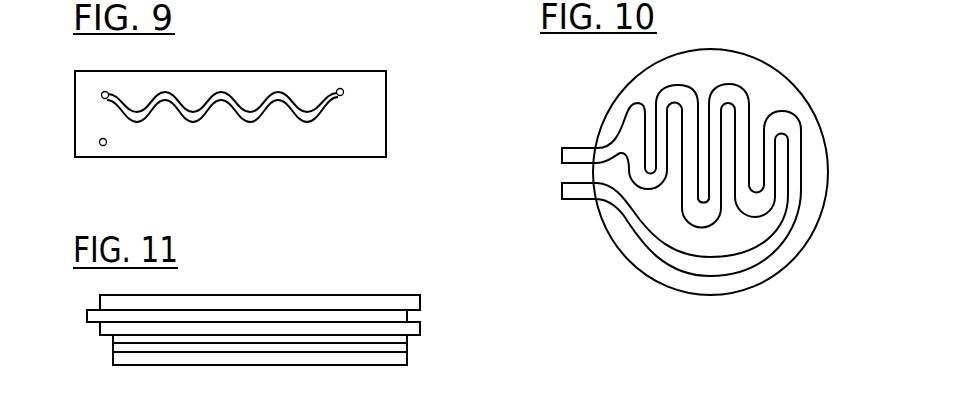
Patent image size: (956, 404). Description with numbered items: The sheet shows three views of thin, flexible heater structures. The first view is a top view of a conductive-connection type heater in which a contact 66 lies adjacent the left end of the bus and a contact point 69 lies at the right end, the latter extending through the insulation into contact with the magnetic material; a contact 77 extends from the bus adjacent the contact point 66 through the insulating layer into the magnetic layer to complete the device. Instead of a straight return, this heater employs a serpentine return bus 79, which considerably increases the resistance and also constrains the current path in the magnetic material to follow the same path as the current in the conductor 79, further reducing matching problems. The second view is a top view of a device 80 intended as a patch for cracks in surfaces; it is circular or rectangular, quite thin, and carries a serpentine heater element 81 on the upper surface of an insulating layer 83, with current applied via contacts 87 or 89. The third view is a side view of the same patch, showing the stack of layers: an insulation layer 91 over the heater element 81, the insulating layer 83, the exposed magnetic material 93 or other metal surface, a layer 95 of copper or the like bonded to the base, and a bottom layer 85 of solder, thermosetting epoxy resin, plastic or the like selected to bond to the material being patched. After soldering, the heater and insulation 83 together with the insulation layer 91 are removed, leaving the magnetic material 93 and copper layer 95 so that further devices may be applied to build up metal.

In FIG. 9, the contact 66 is at (105, 91).
In FIG. 9, the contact point 69 is at (340, 88).
In FIG. 9, the contact 77 is at (103, 146).
In FIG. 9, the serpentine return bus 79 is at (209, 96).
In FIG. 10, the device 80 is at (812, 88).
In FIG. 10, the serpentine heater element 81 is at (797, 183).
In FIG. 11, the serpentine heater element 81 is at (403, 315).
In FIG. 11, the insulating layer 83 is at (415, 325).
In FIG. 11, the bottom layer 85 is at (400, 360).
In FIG. 10, the contact 87 is at (562, 154).
In FIG. 10, the contact 89 is at (562, 191).
In FIG. 11, the insulation layer 91 is at (108, 302).
In FIG. 11, the magnetic material 93 is at (118, 337).
In FIG. 11, the copper layer 95 is at (118, 347).